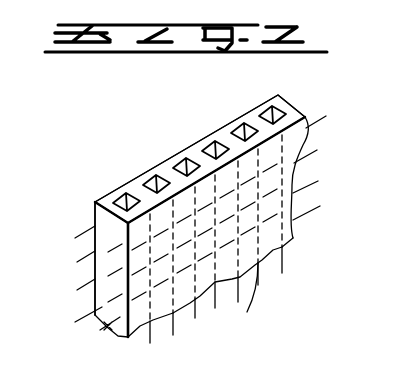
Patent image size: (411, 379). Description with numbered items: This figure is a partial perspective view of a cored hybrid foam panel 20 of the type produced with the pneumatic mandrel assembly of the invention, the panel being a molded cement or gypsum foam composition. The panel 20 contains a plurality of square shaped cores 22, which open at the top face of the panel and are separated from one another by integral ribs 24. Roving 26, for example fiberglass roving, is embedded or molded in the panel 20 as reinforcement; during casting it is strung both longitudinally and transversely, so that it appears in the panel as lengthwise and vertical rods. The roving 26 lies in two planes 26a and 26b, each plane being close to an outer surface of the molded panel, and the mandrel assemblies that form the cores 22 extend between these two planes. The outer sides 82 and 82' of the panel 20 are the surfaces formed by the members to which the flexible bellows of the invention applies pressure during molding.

The panel 20 is at (309, 110).
The square shaped cores 22 is at (268, 112).
The integral ribs 24 is at (201, 158).
The roving 26 is at (82, 261).
The plane of roving 26a is at (108, 331).
The plane of roving 26b is at (92, 316).
The side 82 is at (235, 239).
The side 82' is at (64, 258).